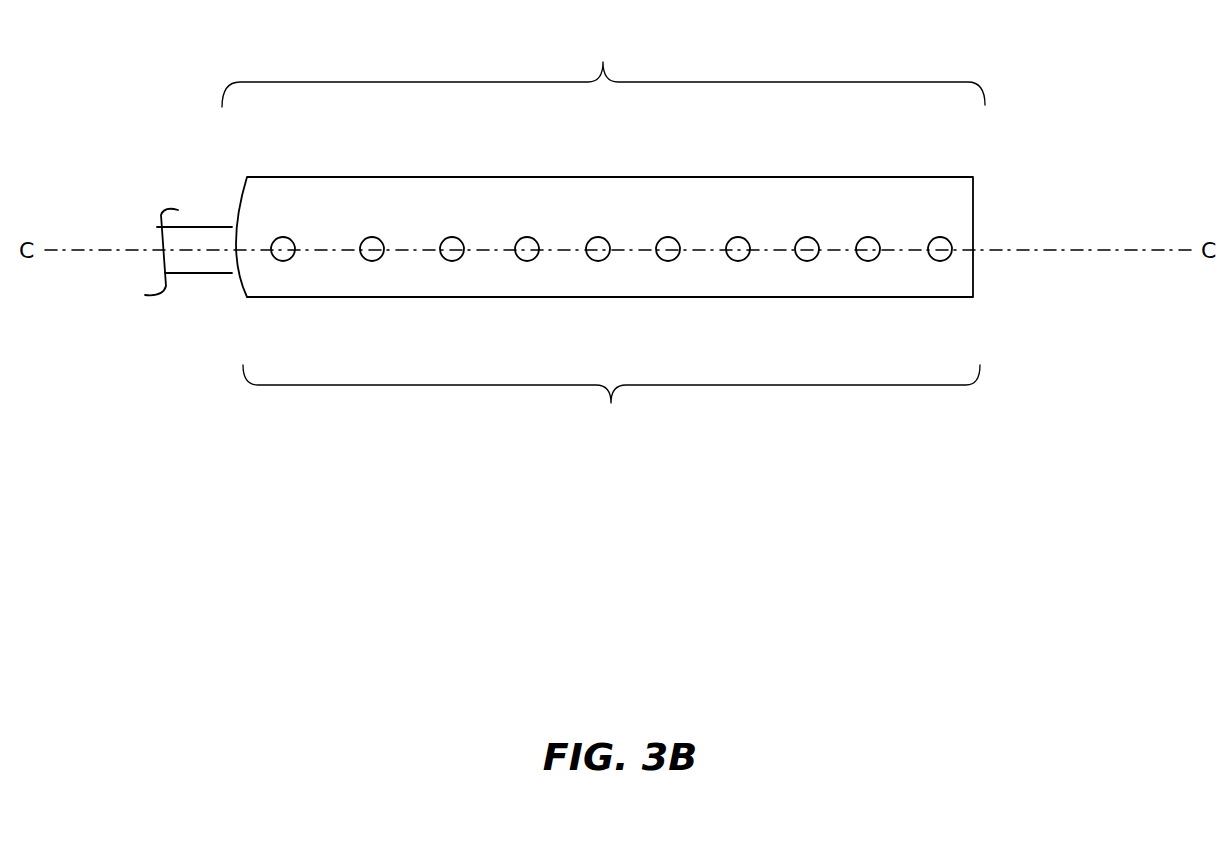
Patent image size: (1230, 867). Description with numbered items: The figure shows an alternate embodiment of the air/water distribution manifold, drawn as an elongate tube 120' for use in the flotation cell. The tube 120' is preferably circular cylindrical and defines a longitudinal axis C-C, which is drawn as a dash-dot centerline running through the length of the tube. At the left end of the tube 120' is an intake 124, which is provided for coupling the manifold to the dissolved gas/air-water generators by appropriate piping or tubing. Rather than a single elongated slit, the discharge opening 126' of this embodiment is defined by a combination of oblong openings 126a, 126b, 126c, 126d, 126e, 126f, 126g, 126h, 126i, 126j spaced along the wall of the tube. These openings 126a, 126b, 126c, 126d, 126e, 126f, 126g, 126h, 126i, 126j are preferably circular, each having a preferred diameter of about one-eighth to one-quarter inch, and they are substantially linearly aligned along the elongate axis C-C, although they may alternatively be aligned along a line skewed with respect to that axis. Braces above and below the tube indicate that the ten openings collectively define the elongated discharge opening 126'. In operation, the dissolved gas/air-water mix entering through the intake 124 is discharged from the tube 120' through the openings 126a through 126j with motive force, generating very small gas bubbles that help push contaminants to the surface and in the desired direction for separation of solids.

The air/water distribution manifold 120' is at (612, 207).
The intake 124 is at (203, 227).
The discharge opening 126' is at (603, 230).
The oblong opening 126a is at (286, 261).
The oblong opening 126b is at (375, 261).
The oblong opening 126c is at (455, 261).
The oblong opening 126d is at (530, 261).
The oblong opening 126e is at (601, 261).
The oblong opening 126f is at (671, 261).
The oblong opening 126g is at (741, 261).
The oblong opening 126h is at (810, 261).
The oblong opening 126i is at (871, 261).
The oblong opening 126j is at (943, 261).